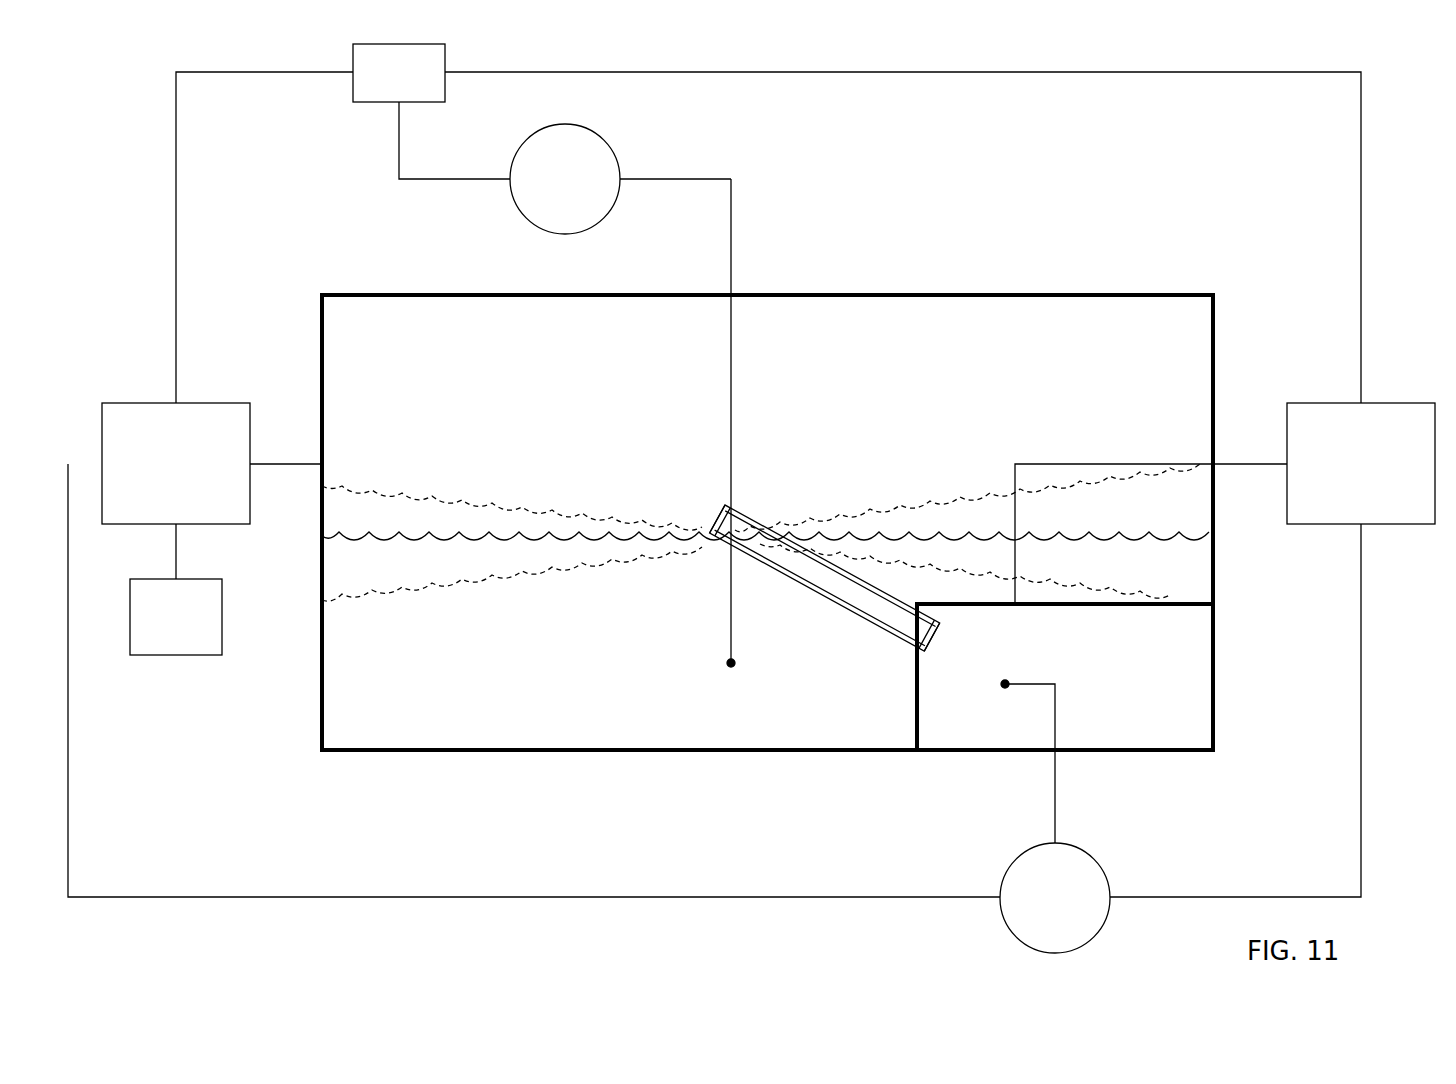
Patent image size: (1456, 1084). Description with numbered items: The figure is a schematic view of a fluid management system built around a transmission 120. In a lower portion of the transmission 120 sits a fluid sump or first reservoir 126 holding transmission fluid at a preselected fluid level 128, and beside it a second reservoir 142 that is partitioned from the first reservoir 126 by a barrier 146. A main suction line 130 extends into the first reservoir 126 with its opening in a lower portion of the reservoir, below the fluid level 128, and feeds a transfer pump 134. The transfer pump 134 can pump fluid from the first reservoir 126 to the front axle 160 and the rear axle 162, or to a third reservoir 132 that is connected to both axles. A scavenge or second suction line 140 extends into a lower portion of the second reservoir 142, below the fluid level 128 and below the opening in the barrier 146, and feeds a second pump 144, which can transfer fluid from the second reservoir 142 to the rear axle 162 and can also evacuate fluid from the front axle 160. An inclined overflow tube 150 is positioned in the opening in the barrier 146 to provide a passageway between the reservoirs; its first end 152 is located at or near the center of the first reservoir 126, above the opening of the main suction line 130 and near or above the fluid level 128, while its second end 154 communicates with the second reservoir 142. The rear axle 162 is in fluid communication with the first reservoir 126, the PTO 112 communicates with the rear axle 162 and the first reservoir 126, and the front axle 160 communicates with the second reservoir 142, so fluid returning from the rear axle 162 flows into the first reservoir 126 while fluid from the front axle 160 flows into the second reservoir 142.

The PTO 112 is at (199, 629).
The transmission 120 is at (1140, 338).
The first reservoir 126 is at (375, 716).
The fluid level 128 is at (392, 537).
The main suction line 130 is at (732, 415).
The third reservoir 132 is at (422, 84).
The transfer pump 134 is at (588, 194).
The second suction line 140 is at (1055, 800).
The second reservoir 142 is at (1150, 660).
The second pump 144 is at (1078, 908).
The barrier 146 is at (917, 678).
The overflow tube 150 is at (828, 580).
The first end 152 is at (708, 510).
The second end 154 is at (938, 633).
The front axle 160 is at (1384, 477).
The rear axle 162 is at (199, 473).